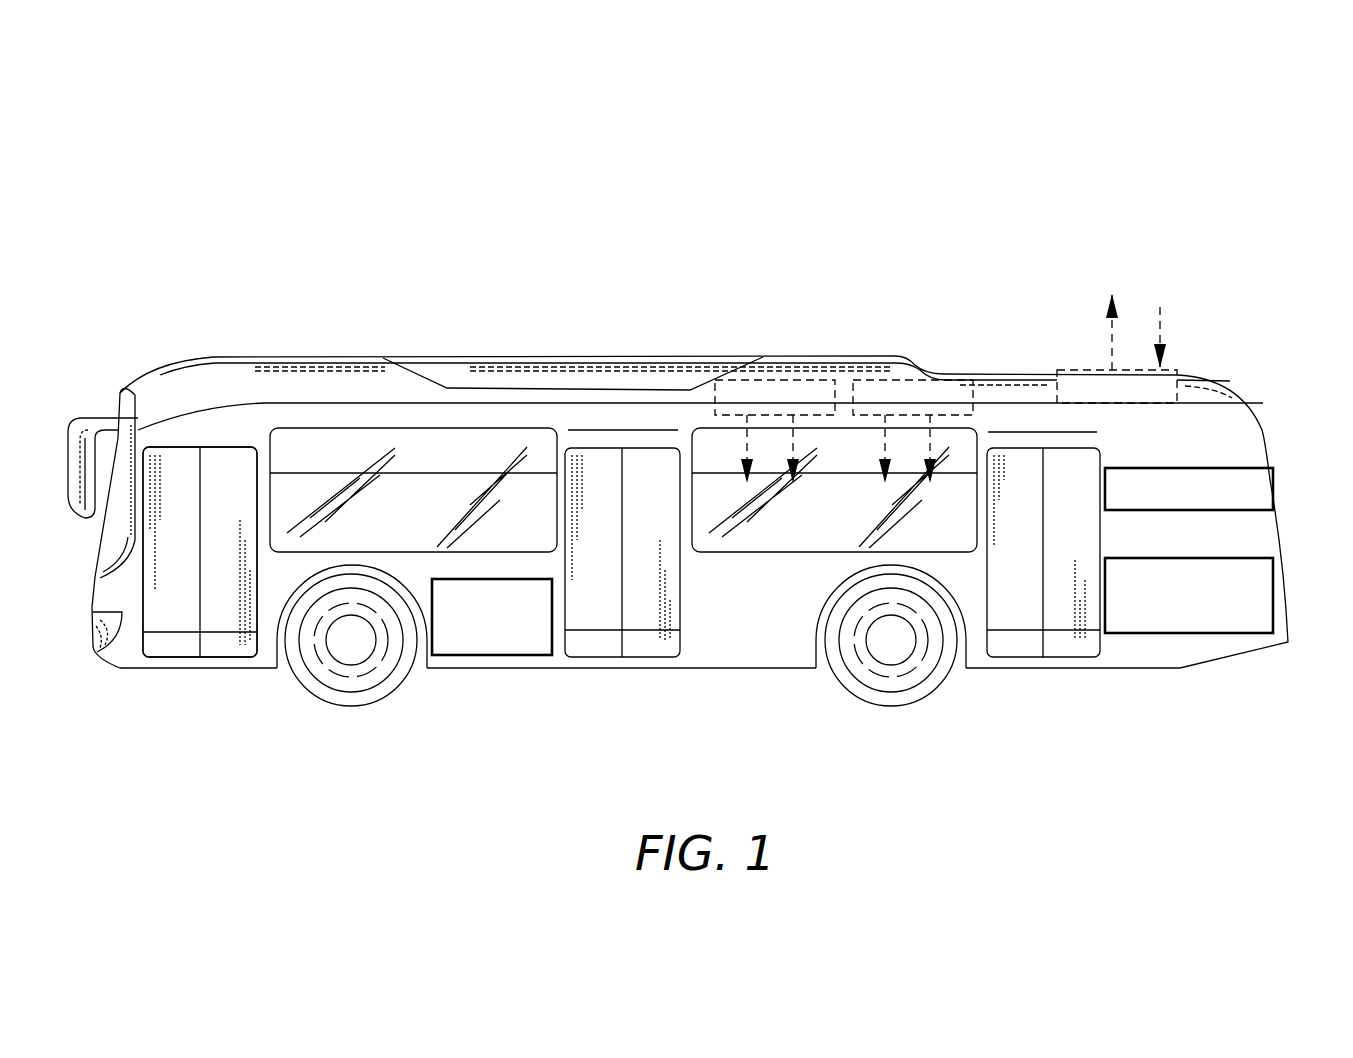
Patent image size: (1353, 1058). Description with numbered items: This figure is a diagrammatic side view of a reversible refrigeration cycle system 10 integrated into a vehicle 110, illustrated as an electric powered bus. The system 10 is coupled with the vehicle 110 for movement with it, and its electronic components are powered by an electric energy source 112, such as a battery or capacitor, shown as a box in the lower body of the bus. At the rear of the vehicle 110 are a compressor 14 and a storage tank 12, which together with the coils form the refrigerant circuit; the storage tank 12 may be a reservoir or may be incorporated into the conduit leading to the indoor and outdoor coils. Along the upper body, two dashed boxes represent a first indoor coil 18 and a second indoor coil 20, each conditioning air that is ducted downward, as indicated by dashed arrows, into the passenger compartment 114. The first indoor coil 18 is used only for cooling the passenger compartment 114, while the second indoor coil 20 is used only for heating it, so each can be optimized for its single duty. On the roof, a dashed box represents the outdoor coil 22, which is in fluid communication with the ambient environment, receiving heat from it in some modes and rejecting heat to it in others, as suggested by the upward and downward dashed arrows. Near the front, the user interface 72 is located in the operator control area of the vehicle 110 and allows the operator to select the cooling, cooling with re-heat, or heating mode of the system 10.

The reversible refrigeration cycle system 10 is at (831, 200).
The storage tank 12 is at (1157, 637).
The compressor 14 is at (1225, 466).
The first indoor coil 18 is at (808, 377).
The second indoor coil 20 is at (918, 377).
The outdoor coil 22 is at (1074, 367).
The user interface 72 is at (146, 588).
The vehicle 110 is at (263, 355).
The electric energy source 112 is at (488, 658).
The passenger compartment 114 is at (722, 515).